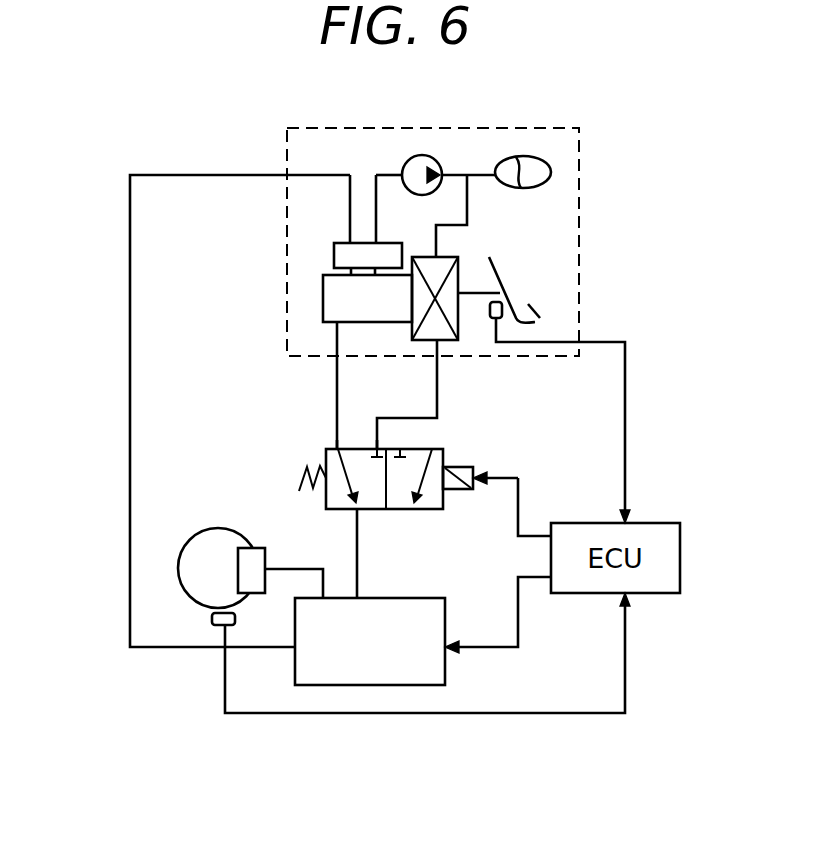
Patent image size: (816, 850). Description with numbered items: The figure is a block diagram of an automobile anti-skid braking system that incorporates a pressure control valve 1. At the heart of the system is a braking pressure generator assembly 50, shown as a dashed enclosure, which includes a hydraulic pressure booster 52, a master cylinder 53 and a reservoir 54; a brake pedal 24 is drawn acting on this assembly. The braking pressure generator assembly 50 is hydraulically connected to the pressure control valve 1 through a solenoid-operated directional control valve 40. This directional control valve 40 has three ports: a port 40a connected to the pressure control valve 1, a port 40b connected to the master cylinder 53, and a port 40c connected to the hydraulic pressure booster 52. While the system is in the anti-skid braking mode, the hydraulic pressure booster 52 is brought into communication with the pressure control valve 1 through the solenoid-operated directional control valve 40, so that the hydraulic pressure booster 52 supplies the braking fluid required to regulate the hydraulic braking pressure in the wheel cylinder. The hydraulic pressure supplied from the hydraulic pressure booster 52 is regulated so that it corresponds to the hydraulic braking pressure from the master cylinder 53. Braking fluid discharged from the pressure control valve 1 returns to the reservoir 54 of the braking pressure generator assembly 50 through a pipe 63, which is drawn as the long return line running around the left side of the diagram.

The pressure control valve 1 is at (466, 612).
The brake pedal 24 is at (495, 270).
The solenoid-operated directional control valve 40 is at (411, 482).
The port 40a is at (355, 509).
The port 40b is at (338, 449).
The port 40c is at (380, 418).
The braking pressure generator assembly 50 is at (560, 128).
The hydraulic pressure booster 52 is at (458, 325).
The master cylinder 53 is at (335, 293).
The reservoir 54 is at (338, 255).
The pipe 63 is at (130, 513).